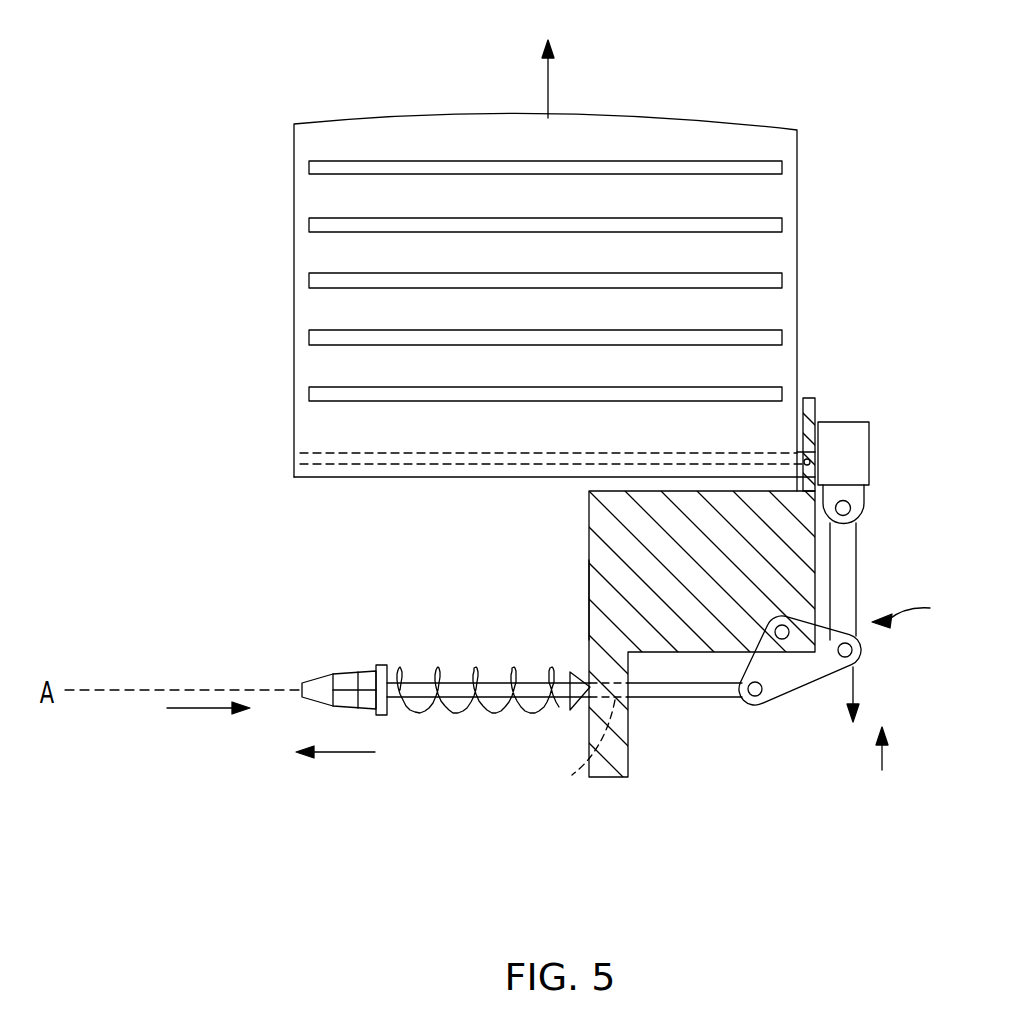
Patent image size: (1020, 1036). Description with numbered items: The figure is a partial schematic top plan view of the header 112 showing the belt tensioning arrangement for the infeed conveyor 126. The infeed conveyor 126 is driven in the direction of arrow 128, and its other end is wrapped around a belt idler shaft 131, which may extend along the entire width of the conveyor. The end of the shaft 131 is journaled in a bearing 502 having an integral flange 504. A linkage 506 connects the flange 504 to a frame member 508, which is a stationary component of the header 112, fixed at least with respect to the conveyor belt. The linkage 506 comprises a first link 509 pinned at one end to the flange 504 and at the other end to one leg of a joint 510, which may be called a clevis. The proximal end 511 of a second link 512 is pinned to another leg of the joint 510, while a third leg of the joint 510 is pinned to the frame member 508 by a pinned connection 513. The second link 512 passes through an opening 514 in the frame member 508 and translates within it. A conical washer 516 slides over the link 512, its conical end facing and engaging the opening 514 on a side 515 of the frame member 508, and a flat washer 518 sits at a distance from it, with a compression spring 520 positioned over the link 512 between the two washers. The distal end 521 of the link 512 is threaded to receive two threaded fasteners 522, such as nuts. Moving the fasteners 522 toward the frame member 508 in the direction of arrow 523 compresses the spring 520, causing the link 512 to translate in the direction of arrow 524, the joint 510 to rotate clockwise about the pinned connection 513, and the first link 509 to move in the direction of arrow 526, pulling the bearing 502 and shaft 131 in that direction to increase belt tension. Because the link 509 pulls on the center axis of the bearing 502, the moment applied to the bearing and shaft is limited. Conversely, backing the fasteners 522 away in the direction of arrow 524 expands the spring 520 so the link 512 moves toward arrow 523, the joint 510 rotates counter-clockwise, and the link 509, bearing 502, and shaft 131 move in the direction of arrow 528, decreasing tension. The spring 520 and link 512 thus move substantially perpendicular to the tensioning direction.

The header 112 is at (880, 92).
The infeed conveyor 126 is at (313, 203).
The arrow 128 is at (553, 80).
The belt idler shaft 131 is at (300, 452).
The bearing 502 is at (860, 462).
The flange 504 is at (863, 502).
The linkage 506 is at (919, 609).
The frame member 508 is at (589, 517).
The first link 509 is at (848, 578).
The joint 510 is at (805, 677).
The proximal end 511 is at (738, 690).
The second link 512 is at (690, 688).
The pinned connection 513 is at (775, 618).
The opening 514 is at (583, 754).
The side 515 is at (589, 628).
The conical washer 516 is at (588, 703).
The flat washer 518 is at (380, 665).
The compression spring 520 is at (447, 664).
The distal end 521 is at (307, 680).
The threaded fasteners 522 is at (368, 672).
The arrow 523 is at (205, 709).
The arrow 524 is at (352, 757).
The arrow 526 is at (855, 690).
The arrow 528 is at (885, 758).